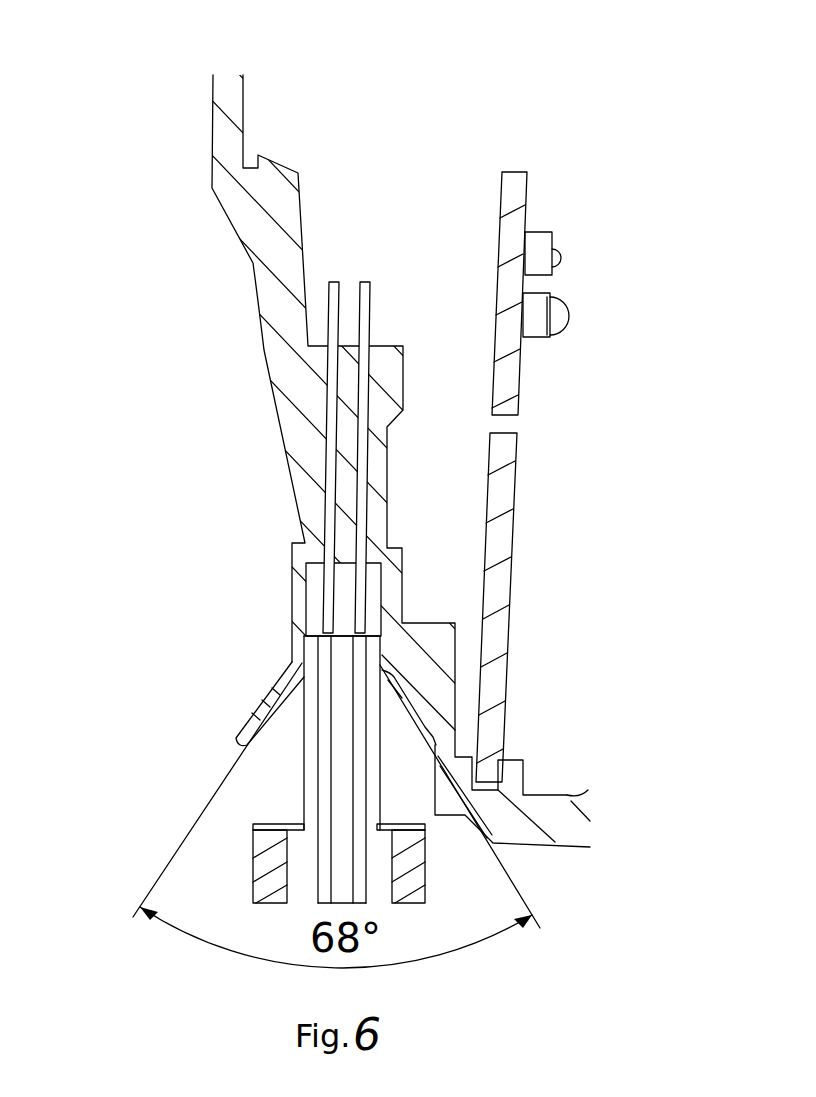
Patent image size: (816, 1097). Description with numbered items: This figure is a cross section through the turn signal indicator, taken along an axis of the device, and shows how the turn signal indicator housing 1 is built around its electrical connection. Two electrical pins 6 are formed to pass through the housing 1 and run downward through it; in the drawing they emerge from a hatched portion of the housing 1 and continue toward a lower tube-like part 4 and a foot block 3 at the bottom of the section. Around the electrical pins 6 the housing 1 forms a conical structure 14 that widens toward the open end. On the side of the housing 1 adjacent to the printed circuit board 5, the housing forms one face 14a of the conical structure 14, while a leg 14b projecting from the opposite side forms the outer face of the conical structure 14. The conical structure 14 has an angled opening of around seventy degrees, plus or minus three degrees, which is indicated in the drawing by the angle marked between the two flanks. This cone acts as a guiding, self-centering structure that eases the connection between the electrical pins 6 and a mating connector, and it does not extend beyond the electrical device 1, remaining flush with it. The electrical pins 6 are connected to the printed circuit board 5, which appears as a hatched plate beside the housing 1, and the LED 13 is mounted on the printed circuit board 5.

The turn signal indicator housing 1 is at (267, 300).
The nozzle tip 3 is at (426, 870).
The nozzle tube insert 4 is at (303, 893).
The printed circuit board 5 is at (492, 613).
The electrical pins 6 is at (366, 306).
The LED 13 is at (553, 287).
The conical structure 14 is at (349, 706).
The face of the conical structure 14a is at (442, 742).
The leg 14b is at (243, 742).